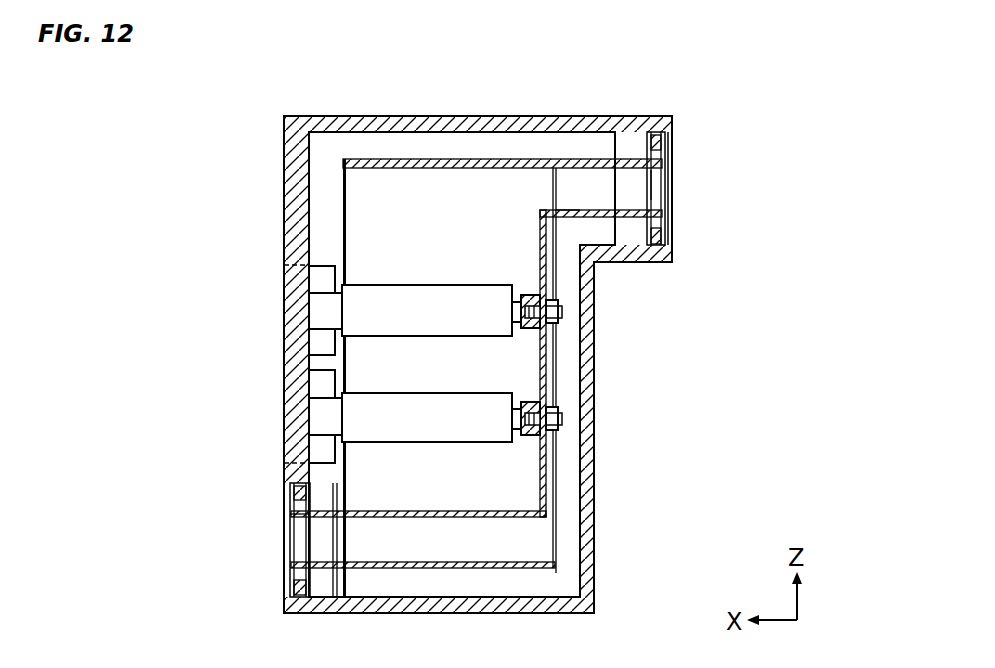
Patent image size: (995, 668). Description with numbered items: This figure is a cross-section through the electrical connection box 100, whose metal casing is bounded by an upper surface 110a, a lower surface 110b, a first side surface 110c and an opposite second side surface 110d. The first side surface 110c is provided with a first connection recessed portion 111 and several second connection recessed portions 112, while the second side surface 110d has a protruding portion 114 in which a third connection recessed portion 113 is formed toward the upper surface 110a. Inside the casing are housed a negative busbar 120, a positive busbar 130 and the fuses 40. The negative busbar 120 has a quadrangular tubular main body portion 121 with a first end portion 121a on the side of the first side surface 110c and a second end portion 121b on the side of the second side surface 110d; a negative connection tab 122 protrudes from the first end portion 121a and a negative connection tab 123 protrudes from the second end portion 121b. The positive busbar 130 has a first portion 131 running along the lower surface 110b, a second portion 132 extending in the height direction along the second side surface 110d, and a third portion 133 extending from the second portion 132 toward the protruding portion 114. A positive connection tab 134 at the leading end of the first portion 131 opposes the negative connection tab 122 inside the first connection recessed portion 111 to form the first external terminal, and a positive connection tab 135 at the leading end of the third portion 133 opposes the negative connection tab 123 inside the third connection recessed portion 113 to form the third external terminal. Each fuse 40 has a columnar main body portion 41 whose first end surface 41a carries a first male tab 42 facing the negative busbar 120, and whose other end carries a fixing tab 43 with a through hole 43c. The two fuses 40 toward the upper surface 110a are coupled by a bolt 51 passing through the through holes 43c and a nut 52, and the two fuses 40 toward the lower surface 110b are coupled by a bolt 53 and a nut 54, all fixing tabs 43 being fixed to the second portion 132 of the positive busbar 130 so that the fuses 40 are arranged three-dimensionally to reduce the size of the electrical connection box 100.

The electrical connection box 100 is at (255, 148).
The upper surface 110a is at (448, 117).
The lower surface 110b is at (430, 613).
The first side surface 110c is at (284, 195).
The second side surface 110d is at (590, 296).
The first connection recessed portion 111 is at (300, 490).
The second connection recessed portion 112 is at (330, 378).
The third connection recessed portion 113 is at (656, 140).
The protruding portion 114 is at (660, 262).
The negative busbar 120 is at (556, 566).
The main body portion 121 is at (520, 159).
The first end portion 121a is at (343, 210).
The second end portion 121b is at (580, 530).
The negative connection tab 122 is at (305, 562).
The negative connection tab 123 is at (656, 178).
The positive busbar 130 is at (497, 511).
The first portion 131 is at (437, 511).
The second portion 132 is at (546, 363).
The third portion 133 is at (567, 211).
The positive connection tab 134 is at (305, 516).
The positive connection tab 135 is at (656, 213).
The fuse 40 is at (462, 248).
The main body portion 41 is at (420, 285).
The first end surface 41a is at (345, 284).
The first male tab 42 is at (315, 312).
The fixing tab 43 is at (527, 295).
The through hole 43c is at (520, 324).
The bolt 51 is at (513, 304).
The nut 52 is at (562, 318).
The bolt 53 is at (513, 411).
The nut 54 is at (562, 424).